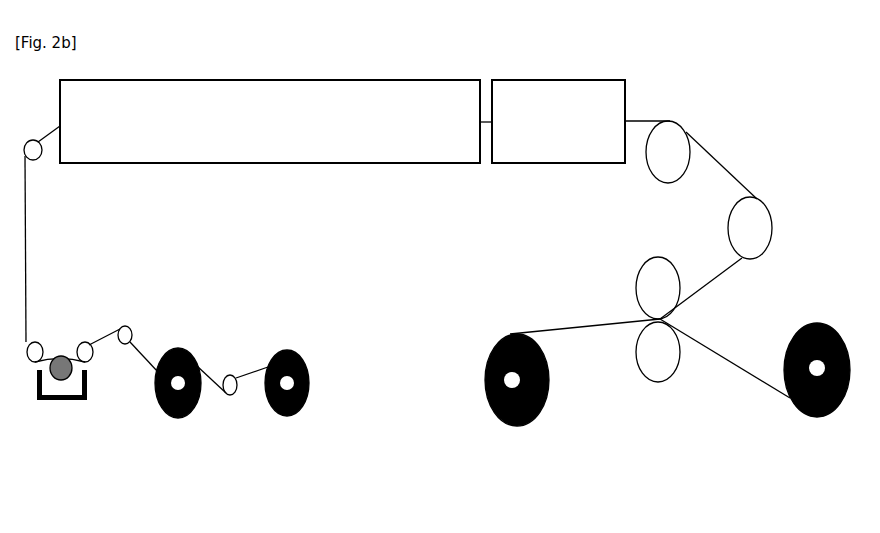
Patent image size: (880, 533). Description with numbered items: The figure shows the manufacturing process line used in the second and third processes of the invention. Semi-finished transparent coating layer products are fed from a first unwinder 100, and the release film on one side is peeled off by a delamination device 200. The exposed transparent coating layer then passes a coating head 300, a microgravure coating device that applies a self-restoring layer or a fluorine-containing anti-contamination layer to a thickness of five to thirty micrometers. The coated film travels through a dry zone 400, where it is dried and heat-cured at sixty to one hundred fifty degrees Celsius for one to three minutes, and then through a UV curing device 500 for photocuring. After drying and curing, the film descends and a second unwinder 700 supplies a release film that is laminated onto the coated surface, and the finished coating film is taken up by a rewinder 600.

The first unwinder 100 is at (183, 420).
The delamination device 200 is at (287, 418).
The coating head 300 is at (60, 404).
The dry zone 400 is at (270, 164).
The UV curing device 500 is at (577, 164).
The rewinder 600 is at (527, 428).
The second unwinder 700 is at (838, 416).